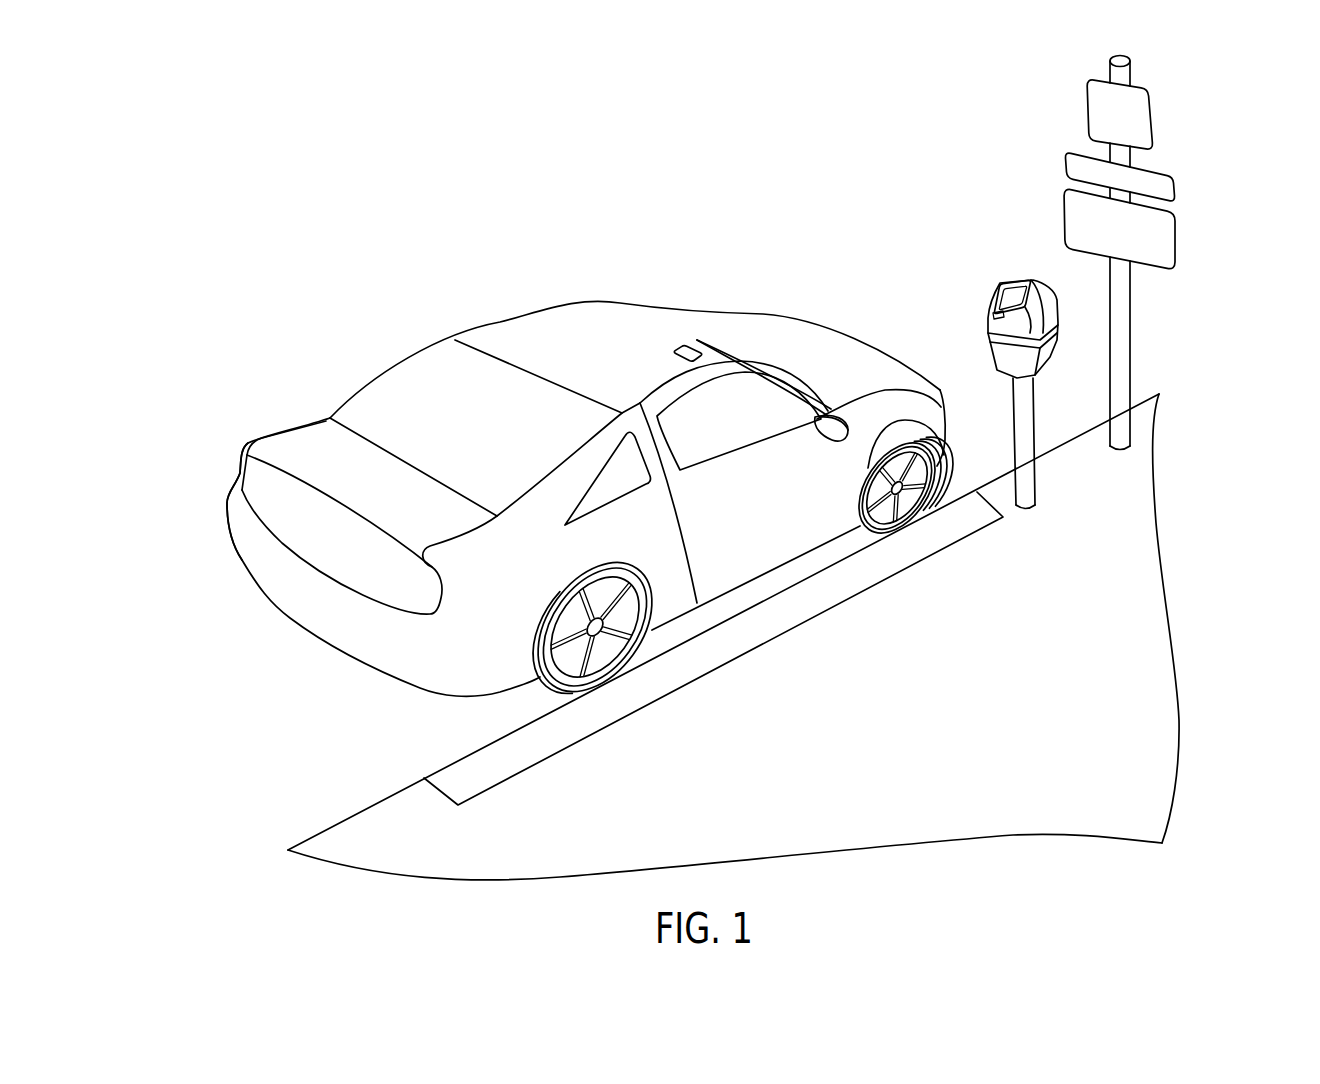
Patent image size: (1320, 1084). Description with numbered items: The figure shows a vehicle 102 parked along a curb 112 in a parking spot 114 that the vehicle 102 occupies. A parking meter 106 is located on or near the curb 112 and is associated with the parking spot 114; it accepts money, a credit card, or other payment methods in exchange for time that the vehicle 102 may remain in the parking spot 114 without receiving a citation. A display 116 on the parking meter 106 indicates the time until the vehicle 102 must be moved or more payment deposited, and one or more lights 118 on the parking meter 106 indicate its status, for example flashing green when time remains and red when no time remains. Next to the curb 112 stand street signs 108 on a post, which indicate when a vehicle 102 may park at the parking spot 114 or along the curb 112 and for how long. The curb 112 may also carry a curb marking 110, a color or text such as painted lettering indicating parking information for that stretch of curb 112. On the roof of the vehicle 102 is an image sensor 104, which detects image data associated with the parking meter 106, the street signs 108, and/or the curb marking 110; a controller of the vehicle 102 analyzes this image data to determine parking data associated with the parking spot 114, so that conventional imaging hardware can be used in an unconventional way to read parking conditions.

The vehicle 102 is at (533, 317).
The image sensor 104 is at (690, 350).
The parking meter 106 is at (999, 362).
The street signs 108 is at (1193, 155).
The curb marking 110 is at (933, 542).
The curb 112 is at (399, 738).
The parking spot 114 is at (209, 560).
The display 116 is at (1022, 295).
The lights 118 is at (990, 312).